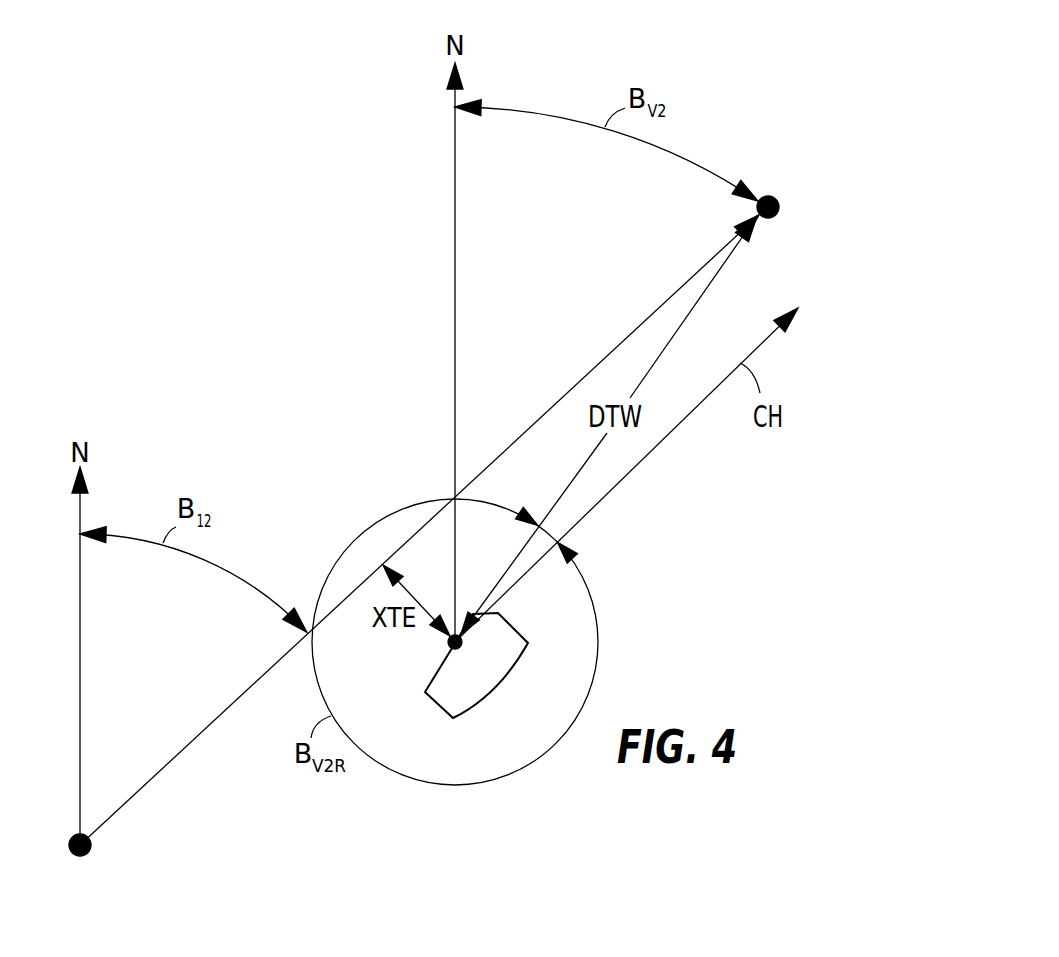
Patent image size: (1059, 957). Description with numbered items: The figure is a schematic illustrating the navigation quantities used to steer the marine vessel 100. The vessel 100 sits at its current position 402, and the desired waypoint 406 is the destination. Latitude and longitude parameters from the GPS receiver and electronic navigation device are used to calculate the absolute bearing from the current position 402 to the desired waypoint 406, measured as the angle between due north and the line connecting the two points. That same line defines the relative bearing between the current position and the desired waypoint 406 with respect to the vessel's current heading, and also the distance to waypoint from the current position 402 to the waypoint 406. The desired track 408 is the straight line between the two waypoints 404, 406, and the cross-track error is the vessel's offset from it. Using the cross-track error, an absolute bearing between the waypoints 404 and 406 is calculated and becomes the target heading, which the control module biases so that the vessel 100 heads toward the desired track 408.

The marine vessel 100 is at (504, 690).
The vessel's current position 402 is at (460, 648).
The waypoint 404 is at (68, 838).
The desired waypoint 406 is at (780, 209).
The desired track 408 is at (415, 533).